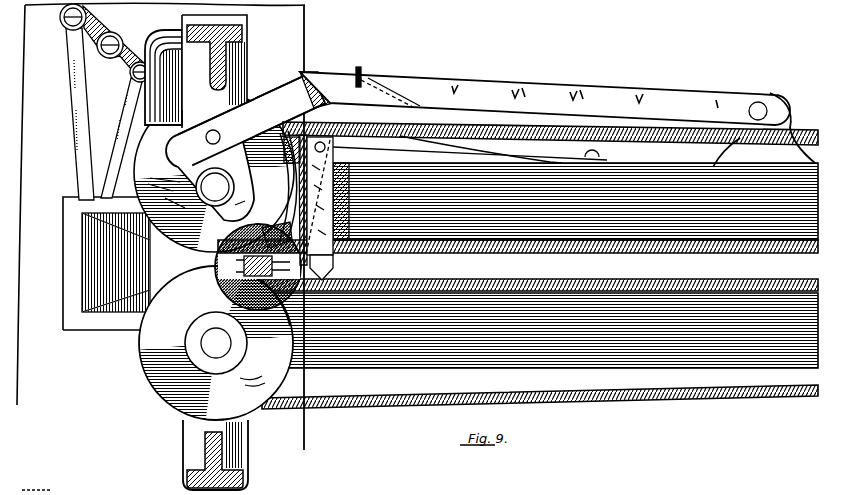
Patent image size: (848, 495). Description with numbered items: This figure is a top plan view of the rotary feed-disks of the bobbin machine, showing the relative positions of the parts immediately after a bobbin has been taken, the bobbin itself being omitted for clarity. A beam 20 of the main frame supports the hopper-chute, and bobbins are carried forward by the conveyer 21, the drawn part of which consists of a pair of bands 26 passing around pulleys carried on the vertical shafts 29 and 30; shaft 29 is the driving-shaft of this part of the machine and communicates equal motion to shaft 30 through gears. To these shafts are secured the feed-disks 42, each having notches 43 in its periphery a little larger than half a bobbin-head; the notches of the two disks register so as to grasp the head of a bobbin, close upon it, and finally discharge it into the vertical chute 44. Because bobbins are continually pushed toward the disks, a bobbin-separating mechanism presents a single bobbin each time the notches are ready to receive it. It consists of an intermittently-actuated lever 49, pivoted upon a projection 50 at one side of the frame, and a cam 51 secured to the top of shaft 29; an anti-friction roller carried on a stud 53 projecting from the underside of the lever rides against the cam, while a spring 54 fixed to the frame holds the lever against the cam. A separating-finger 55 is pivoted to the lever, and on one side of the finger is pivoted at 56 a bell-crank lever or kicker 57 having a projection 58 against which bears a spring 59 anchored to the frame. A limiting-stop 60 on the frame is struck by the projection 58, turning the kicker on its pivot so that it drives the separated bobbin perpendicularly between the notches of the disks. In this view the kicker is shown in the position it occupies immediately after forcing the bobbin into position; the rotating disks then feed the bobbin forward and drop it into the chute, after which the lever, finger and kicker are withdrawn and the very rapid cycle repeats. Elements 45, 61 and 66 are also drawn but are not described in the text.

The beam 20 is at (539, 265).
The conveyer 21 is at (680, 253).
The bands 26 is at (810, 129).
The vertical shaft 29 is at (215, 187).
The vertical shaft 30 is at (216, 343).
The feed-disks 42 is at (217, 325).
The notches 43 is at (222, 290).
The vertical chute 44 is at (123, 331).
The stop 45 is at (282, 228).
The lever 49 is at (559, 91).
The projection 50 is at (607, 130).
The cam 51 is at (176, 178).
The stud 53 is at (220, 137).
The spring 54 is at (360, 67).
The separating-finger 55 is at (336, 266).
The pivot 56 is at (327, 147).
The bell-crank lever or kicker 57 is at (311, 200).
The projection 58 is at (284, 150).
The spring 59 is at (397, 147).
The limiting-stop 60 is at (280, 187).
The roller bolt 61 is at (243, 266).
The guide rollers 66 is at (142, 60).